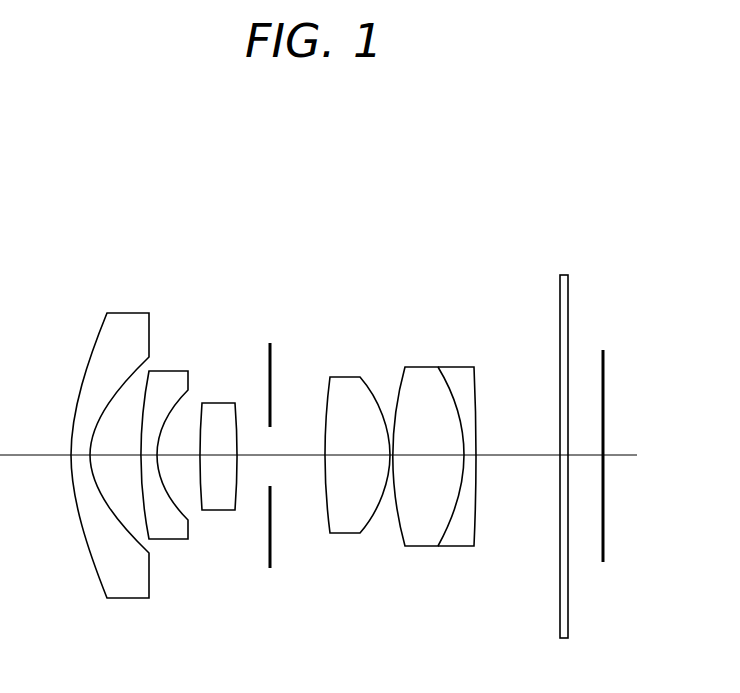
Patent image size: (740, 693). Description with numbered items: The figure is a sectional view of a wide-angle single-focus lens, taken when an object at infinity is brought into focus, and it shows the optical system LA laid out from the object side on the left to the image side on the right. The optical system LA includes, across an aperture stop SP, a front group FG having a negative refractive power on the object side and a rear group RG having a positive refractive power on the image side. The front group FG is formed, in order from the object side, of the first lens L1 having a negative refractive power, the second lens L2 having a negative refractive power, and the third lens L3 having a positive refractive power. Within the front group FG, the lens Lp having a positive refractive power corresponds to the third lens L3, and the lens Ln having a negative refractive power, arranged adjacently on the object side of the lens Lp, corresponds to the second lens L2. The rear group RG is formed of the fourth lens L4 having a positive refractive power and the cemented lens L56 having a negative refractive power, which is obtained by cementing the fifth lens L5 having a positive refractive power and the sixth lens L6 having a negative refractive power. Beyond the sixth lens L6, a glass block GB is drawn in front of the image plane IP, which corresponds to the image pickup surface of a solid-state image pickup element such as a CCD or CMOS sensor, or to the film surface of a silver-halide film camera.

The optical system LA is at (478, 142).
The front group FG is at (75, 197).
The rear group RG is at (313, 197).
The first lens L1 is at (75, 290).
The second lens L2 is at (152, 290).
The third lens L3 is at (198, 290).
The fourth lens L4 is at (322, 290).
The fifth lens L5 is at (400, 290).
The sixth lens L6 is at (439, 290).
The cemented lens L56 is at (390, 243).
The lens having a negative refractive power Ln is at (166, 383).
The lens having a positive refractive power Lp is at (217, 369).
The aperture stop SP is at (268, 360).
The glass block GB is at (568, 302).
The image plane IP is at (605, 376).